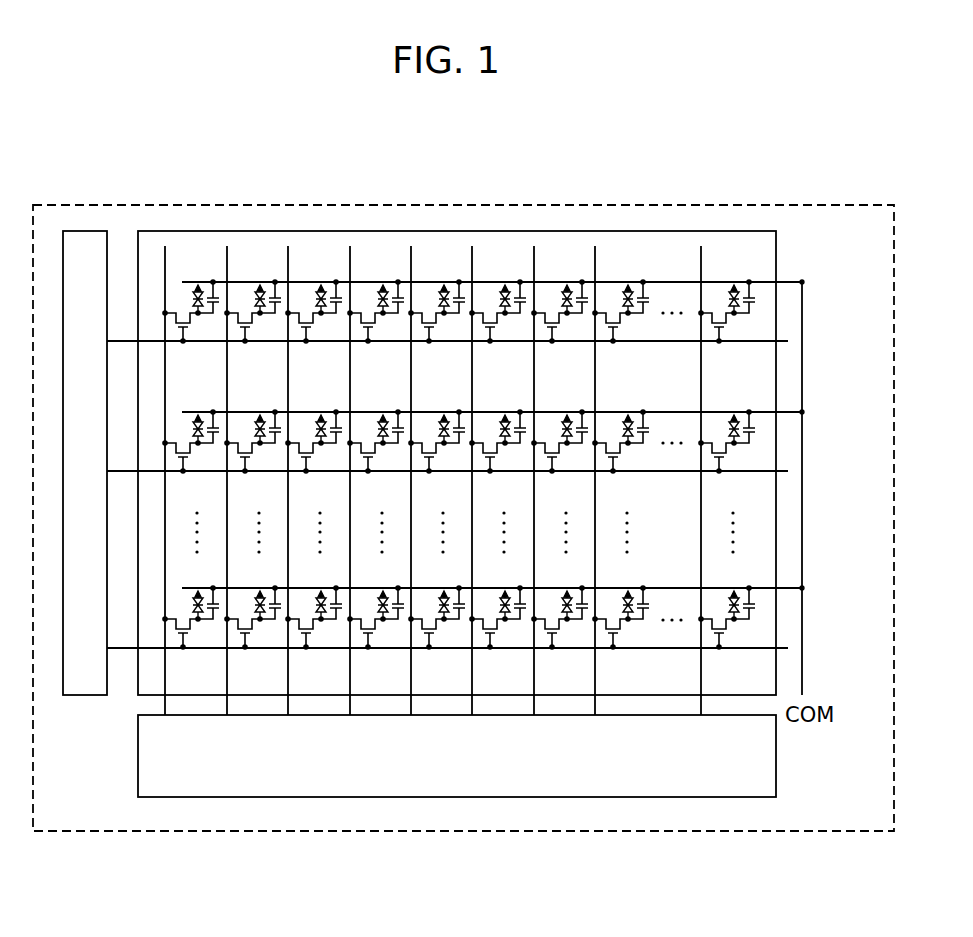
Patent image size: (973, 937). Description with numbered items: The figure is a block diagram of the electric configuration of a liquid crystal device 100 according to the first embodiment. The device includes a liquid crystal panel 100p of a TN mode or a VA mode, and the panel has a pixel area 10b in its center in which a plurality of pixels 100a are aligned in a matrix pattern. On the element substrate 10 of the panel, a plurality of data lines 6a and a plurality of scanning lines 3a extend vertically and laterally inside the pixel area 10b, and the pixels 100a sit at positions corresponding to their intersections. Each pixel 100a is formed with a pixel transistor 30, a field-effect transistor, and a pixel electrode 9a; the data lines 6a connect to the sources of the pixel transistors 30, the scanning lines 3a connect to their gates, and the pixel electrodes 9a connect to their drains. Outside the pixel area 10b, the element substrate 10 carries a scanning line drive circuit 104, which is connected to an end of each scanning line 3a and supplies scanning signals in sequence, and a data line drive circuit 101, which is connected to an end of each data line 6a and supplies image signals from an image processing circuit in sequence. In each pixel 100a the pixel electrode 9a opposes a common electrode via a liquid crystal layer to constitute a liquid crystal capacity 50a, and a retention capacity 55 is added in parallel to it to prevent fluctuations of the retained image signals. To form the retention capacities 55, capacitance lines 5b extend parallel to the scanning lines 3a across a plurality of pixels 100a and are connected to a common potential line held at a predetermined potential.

The liquid crystal device 100 is at (212, 194).
The element substrate 10 is at (463, 472).
The liquid crystal panel 100p is at (463, 472).
The pixel 100a is at (240, 288).
The pixel area 10b is at (457, 404).
The scanning line drive circuit 104 is at (86, 231).
The data line drive circuit 101 is at (696, 797).
The data line 6a is at (284, 262).
The capacitance line 5b is at (655, 282).
The scanning line 3a is at (686, 341).
The liquid crystal capacity 50a is at (219, 375).
The pixel transistor 30 is at (197, 328).
The retention capacity 55 is at (216, 312).
The pixel electrode 9a is at (199, 318).